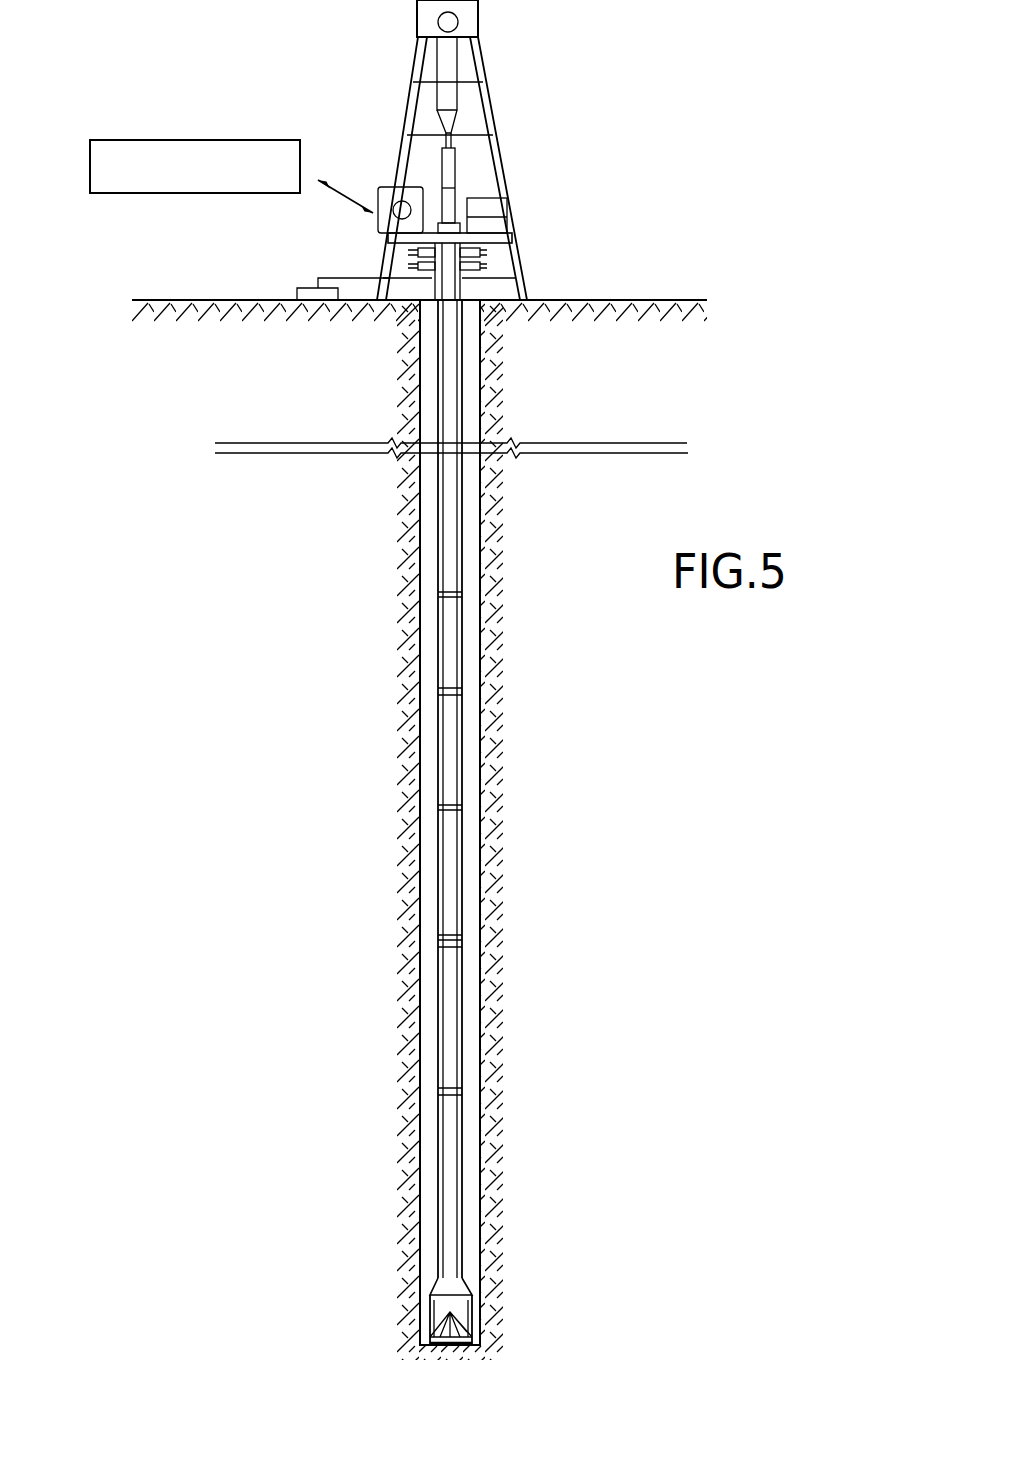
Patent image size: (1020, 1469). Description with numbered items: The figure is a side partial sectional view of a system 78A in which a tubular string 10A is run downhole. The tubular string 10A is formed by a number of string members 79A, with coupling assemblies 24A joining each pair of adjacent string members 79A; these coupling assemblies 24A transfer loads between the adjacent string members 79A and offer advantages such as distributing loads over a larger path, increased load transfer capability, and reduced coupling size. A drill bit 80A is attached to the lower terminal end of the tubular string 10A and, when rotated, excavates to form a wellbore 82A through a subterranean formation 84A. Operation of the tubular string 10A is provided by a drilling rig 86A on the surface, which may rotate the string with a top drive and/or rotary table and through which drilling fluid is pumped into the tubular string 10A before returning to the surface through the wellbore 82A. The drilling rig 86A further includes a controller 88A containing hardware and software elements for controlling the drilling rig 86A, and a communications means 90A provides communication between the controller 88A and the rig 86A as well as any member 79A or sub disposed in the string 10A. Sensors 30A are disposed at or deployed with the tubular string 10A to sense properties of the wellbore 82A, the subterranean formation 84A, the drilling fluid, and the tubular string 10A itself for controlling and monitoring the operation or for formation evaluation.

The tubular string 10A is at (463, 905).
The coupling assembly 24A is at (437, 1090).
The sensor 30A is at (440, 947).
The system 78A is at (658, 242).
The string member 79A is at (445, 1169).
The drill bit 80A is at (460, 1313).
The wellbore 82A is at (480, 1043).
The subterranean formation 84A is at (502, 1190).
The drilling rig 86A is at (518, 108).
The controller 88A is at (188, 138).
The communications means 90A is at (347, 200).